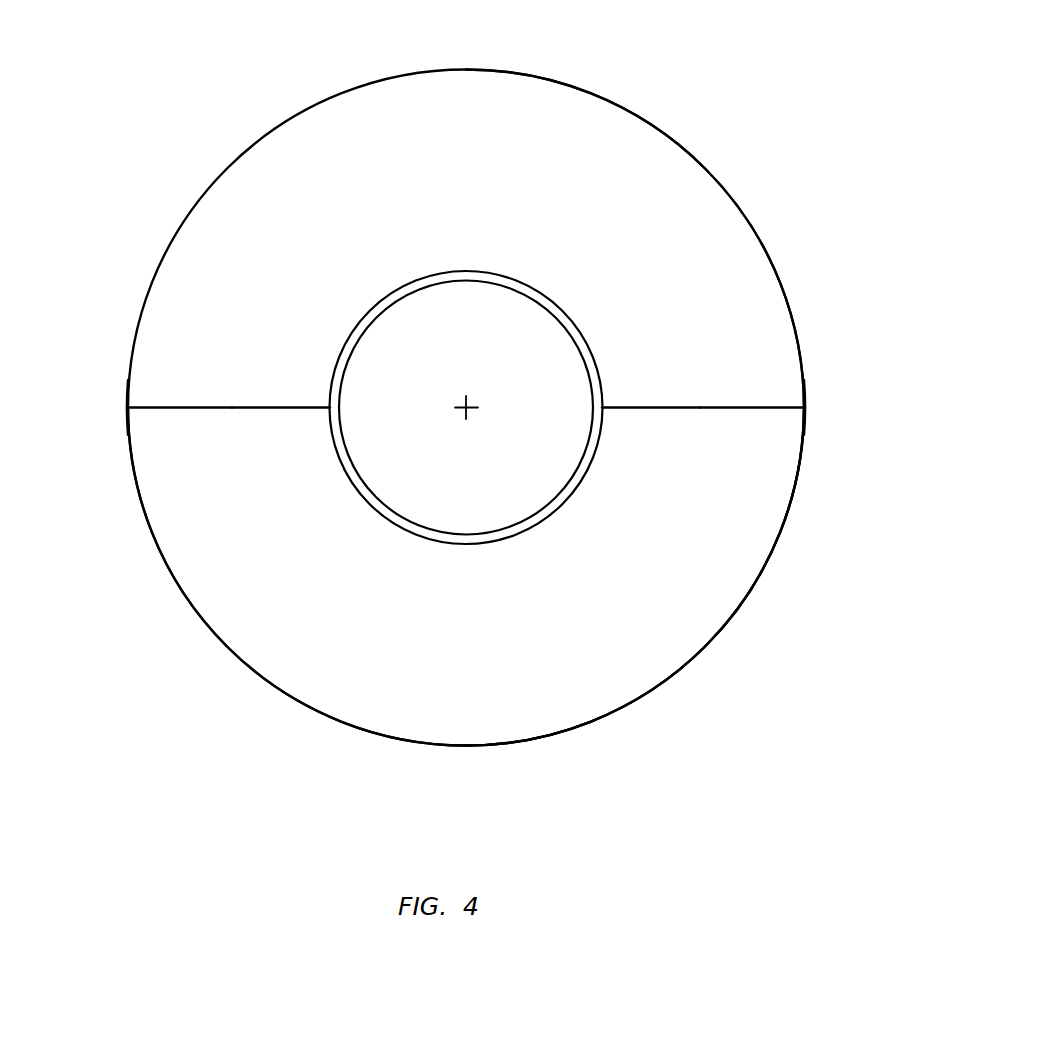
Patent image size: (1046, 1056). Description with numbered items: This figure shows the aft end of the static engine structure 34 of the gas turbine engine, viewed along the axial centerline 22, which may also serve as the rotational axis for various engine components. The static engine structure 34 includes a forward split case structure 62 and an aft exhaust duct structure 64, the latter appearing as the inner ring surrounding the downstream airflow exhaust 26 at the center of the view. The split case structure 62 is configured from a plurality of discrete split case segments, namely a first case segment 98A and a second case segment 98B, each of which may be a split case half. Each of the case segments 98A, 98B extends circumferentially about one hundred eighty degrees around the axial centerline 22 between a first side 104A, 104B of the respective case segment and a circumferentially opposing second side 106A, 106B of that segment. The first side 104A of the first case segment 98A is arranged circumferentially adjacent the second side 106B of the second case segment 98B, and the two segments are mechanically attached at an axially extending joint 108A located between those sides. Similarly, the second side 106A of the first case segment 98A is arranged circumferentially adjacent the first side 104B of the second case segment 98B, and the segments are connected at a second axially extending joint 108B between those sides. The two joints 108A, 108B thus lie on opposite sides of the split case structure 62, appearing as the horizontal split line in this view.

The static engine structure 34 is at (733, 99).
The split case structure 62 is at (541, 754).
The first case segment 98A is at (759, 233).
The second case segment 98B is at (676, 676).
The exhaust duct structure 64 is at (509, 538).
The airflow exhaust 26 is at (567, 492).
The axial centerline 22 is at (470, 404).
The first side of the first case segment 104A is at (153, 408).
The first side of the second case segment 104B is at (765, 407).
The second side of the first case segment 106A is at (777, 408).
The second side of the second case segment 106B is at (168, 407).
The axially extending joint 108A is at (118, 407).
The axially extending joint 108B is at (815, 407).